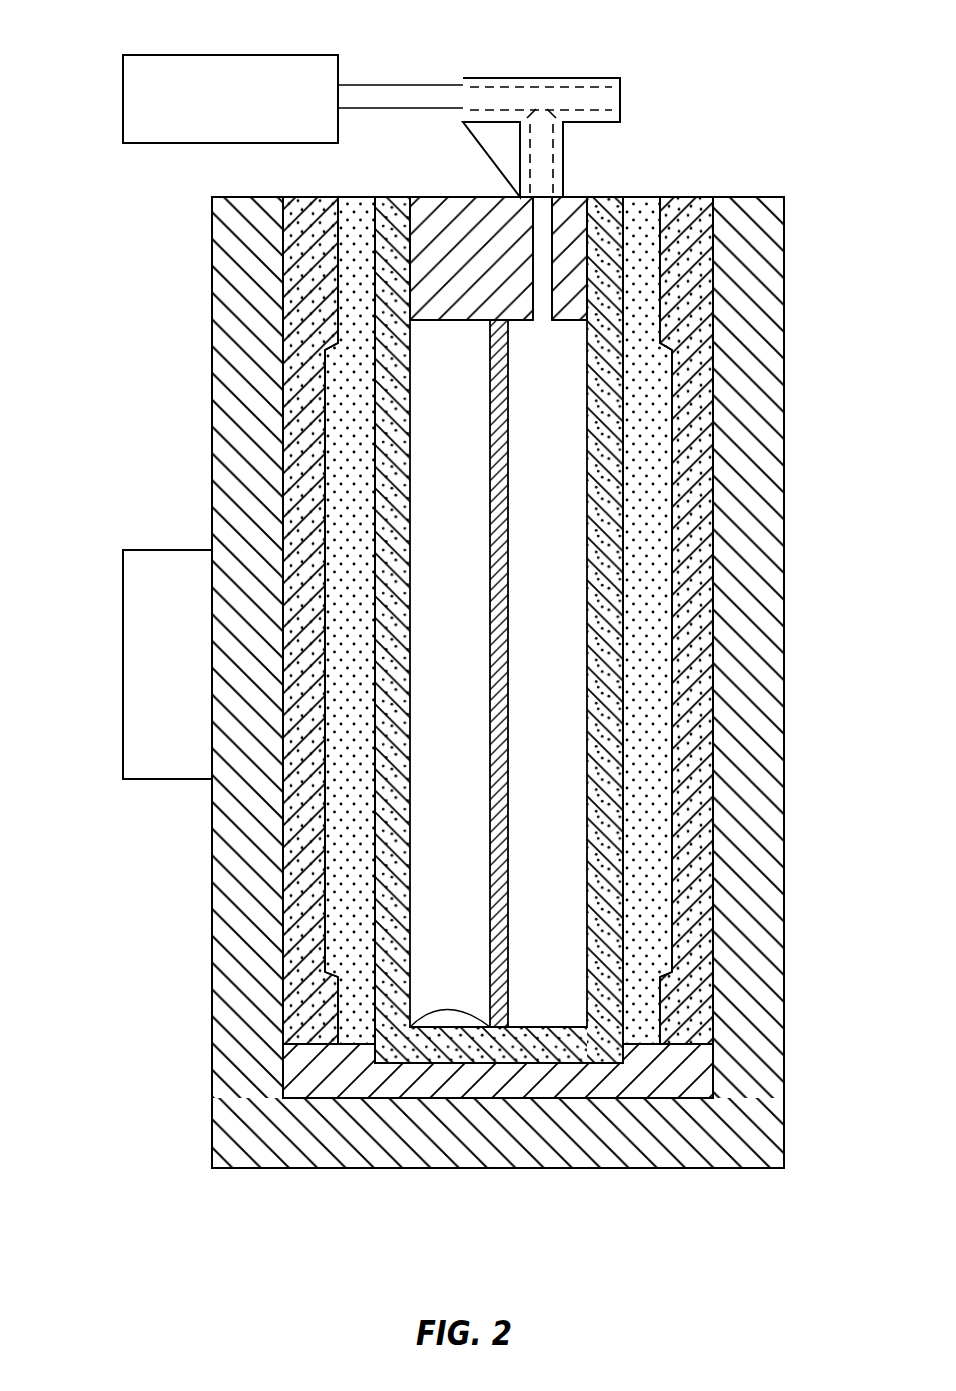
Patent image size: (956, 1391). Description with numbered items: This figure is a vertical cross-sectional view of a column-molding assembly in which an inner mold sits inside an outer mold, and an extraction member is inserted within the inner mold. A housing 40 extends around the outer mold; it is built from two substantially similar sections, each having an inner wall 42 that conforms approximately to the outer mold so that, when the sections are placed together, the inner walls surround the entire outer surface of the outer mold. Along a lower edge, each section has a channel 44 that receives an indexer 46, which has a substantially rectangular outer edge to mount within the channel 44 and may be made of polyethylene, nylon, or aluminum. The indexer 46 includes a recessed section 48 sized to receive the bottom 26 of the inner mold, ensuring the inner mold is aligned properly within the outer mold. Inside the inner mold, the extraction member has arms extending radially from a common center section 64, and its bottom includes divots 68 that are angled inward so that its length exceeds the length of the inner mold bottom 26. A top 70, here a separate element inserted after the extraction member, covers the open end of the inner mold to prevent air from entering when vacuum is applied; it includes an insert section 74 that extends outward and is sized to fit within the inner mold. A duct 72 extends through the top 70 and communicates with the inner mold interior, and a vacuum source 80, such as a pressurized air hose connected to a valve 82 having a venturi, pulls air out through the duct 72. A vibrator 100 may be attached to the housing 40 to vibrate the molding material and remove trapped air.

The bottom 26 is at (585, 1030).
The housing 40 is at (750, 815).
The inner wall 42 is at (300, 873).
The channel 44 is at (283, 1062).
The indexer 46 is at (333, 1078).
The recessed section 48 is at (430, 1063).
The center section 64 is at (500, 732).
The divots 68 is at (508, 1027).
The top 70 is at (468, 197).
The duct 72 is at (543, 233).
The insert section 74 is at (463, 272).
The vacuum source 80 is at (180, 55).
The valve 82 is at (508, 78).
The vibrator 100 is at (137, 627).